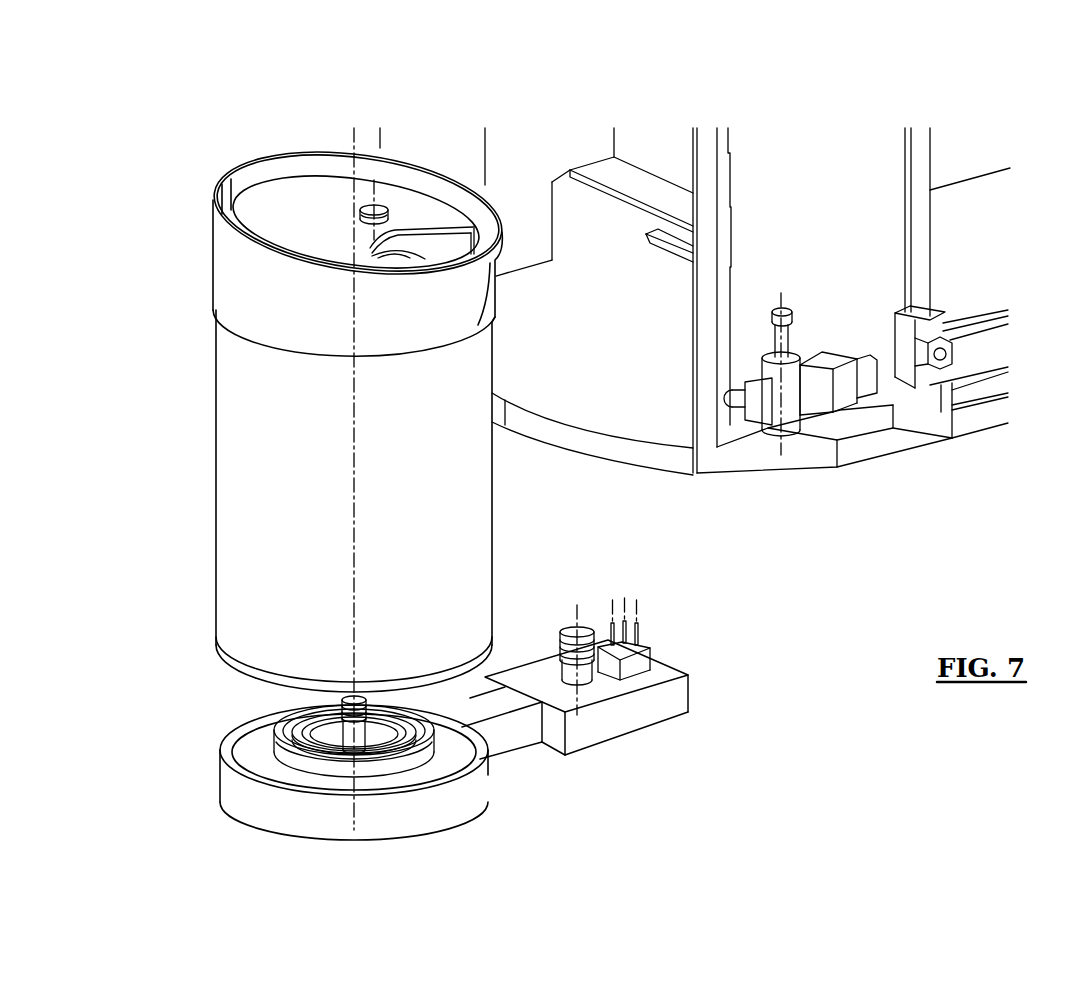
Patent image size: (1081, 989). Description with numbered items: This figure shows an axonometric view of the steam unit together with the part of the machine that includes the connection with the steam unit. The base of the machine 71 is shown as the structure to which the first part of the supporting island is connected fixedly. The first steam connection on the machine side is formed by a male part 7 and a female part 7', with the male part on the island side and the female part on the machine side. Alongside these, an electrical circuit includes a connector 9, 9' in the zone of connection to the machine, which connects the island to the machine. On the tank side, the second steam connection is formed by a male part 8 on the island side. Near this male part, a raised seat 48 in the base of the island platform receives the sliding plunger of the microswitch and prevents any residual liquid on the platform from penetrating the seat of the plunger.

The base of the machine 71 is at (836, 132).
The female part 7' is at (800, 364).
The connector 9' is at (861, 425).
The male part 7 is at (604, 704).
The connector 9 is at (643, 634).
The raised seat 48 is at (300, 738).
The male part 8 is at (385, 740).